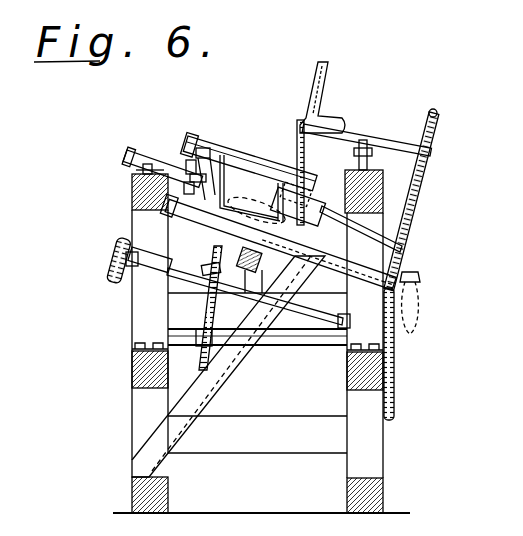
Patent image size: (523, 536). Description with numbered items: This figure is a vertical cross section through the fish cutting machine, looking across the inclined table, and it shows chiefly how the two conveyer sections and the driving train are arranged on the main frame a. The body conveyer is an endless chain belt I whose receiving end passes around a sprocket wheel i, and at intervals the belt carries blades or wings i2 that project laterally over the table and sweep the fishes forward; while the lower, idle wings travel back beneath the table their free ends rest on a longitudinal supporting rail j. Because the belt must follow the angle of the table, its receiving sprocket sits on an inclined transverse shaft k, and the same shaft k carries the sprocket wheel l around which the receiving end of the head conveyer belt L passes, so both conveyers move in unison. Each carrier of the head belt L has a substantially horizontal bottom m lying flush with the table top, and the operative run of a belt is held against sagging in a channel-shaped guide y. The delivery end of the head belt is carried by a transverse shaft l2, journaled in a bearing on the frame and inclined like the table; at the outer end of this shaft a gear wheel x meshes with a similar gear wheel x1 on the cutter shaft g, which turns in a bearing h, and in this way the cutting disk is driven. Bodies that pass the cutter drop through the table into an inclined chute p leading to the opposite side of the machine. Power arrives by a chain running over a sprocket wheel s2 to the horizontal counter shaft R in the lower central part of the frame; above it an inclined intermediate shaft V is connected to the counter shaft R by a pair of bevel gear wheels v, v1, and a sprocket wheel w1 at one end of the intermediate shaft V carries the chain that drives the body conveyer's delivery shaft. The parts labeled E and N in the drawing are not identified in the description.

The transverse shaft k is at (126, 157).
The endless chain belt I is at (195, 152).
The sprocket wheel i is at (134, 183).
The carriers, blades or wings i2 is at (262, 147).
The main frame a is at (254, 186).
The bottom of head carrier m is at (327, 213).
The clamping bolt E is at (349, 155).
The bearing h is at (348, 134).
The gear wheel x1 is at (438, 120).
The cutter shaft g is at (430, 160).
The sprocket wheel l is at (302, 173).
The transverse shaft l2 is at (375, 203).
The channel-shaped guide y is at (199, 184).
The longitudinal supporting rail j is at (255, 270).
The gear wheel x is at (403, 250).
The inclined chute p is at (414, 291).
The sprocket wheel w1 is at (112, 262).
The bevel gear wheel v1 is at (204, 290).
The intermediate shaft V is at (250, 305).
The bevel gear wheel v is at (203, 369).
The counter shaft R is at (303, 348).
The sprocket wheel s2 is at (395, 384).
The inclined beam N is at (135, 445).
The endless chain belt L is at (384, 507).